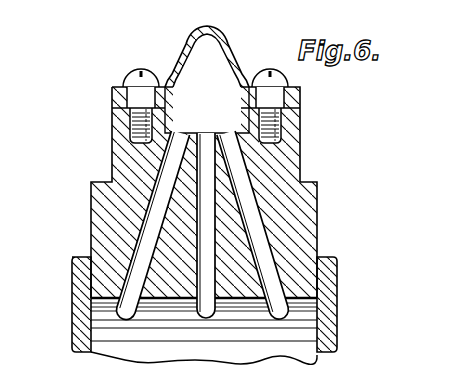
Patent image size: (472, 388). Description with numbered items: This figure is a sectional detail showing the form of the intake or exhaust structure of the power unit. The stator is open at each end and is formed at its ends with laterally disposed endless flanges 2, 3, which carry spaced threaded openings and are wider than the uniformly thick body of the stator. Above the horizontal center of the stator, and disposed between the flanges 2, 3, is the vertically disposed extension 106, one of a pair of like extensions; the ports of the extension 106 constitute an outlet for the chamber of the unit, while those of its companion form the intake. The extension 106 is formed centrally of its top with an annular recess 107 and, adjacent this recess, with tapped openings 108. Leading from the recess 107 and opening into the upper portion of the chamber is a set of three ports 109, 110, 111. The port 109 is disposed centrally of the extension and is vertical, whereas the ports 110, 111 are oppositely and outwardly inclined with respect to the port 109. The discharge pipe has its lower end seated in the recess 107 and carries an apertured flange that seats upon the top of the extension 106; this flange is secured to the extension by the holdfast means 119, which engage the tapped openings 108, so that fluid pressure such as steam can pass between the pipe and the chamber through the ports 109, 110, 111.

The endless flange 2 is at (82, 309).
The endless flange 3 is at (336, 312).
The extension 106 is at (331, 204).
The annular recess 107 is at (128, 132).
The tapped openings 108 is at (130, 121).
The port 109 is at (207, 186).
The port 110 is at (152, 238).
The port 111 is at (260, 232).
The holdfast means 119 is at (263, 82).